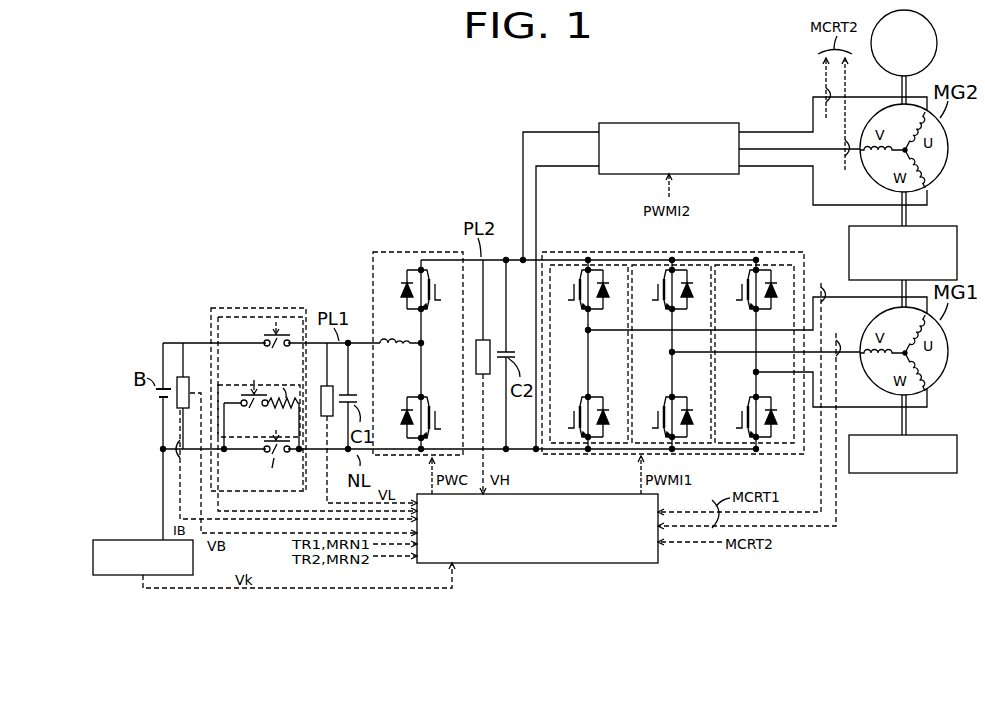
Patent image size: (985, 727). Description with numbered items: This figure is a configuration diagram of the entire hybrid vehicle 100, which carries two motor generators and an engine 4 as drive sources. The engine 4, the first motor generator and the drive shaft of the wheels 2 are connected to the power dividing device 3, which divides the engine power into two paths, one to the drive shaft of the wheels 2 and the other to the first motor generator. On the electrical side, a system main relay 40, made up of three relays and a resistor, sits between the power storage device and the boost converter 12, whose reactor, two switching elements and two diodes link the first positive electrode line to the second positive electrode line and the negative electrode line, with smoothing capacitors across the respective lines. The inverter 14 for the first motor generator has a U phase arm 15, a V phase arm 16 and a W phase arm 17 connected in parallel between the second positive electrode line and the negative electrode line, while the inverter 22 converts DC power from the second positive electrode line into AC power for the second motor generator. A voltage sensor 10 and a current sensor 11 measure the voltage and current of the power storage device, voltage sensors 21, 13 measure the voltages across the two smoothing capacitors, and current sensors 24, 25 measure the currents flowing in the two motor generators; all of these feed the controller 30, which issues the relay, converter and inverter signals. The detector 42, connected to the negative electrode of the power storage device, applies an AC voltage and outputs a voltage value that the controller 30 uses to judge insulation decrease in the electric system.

The hybrid vehicle 100 is at (194, 212).
The wheels 2 is at (938, 43).
The power dividing device 3 is at (938, 227).
The engine 4 is at (940, 435).
The voltage sensor 10 is at (186, 376).
The current sensor 11 is at (296, 465).
The boost converter 12 is at (395, 252).
The voltage sensor 13 is at (483, 339).
The inverter 14 is at (673, 335).
The U phase arm 15 is at (610, 263).
The V phase arm 16 is at (694, 263).
The W phase arm 17 is at (777, 263).
The voltage sensor 21 is at (329, 385).
The inverter 22 is at (617, 123).
The current sensor 24 is at (755, 391).
The current sensor 25 is at (836, 127).
The controller 30 is at (621, 565).
The system main relay 40 is at (262, 308).
The detector 42 is at (110, 538).